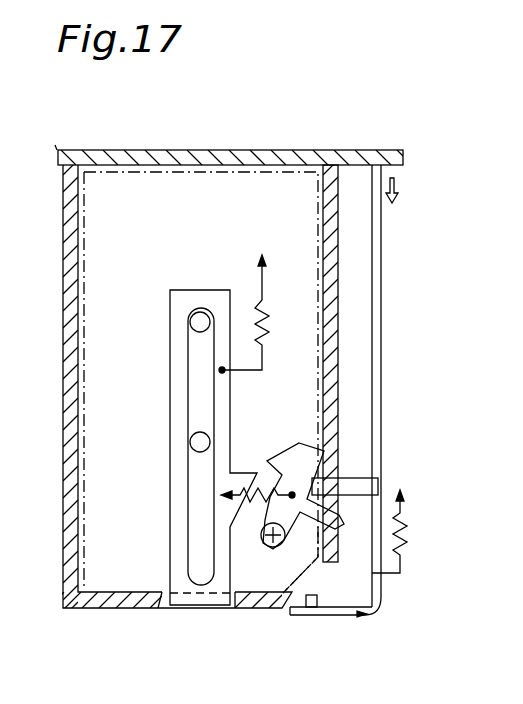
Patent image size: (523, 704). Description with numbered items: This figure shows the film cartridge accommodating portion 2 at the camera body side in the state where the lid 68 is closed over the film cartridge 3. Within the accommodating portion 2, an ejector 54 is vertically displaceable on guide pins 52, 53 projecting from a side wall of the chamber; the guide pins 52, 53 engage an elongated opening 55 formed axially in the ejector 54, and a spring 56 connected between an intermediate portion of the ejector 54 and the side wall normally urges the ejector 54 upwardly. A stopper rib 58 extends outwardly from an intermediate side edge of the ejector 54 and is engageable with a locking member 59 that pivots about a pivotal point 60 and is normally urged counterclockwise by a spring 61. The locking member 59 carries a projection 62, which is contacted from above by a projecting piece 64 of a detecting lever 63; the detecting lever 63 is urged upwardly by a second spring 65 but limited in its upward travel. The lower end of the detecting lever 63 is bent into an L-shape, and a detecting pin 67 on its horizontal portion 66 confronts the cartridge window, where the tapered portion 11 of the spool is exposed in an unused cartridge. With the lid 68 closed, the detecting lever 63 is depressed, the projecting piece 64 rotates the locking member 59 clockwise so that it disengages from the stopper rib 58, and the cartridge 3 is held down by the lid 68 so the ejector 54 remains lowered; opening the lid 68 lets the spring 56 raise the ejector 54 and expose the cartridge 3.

The film cartridge accommodating portion 2 is at (72, 230).
The film cartridge 3 is at (163, 168).
The tapered portion 11 is at (323, 583).
The guide pin 52 is at (198, 322).
The guide pin 53 is at (197, 442).
The ejector 54 is at (185, 297).
The elongated opening 55 is at (197, 383).
The spring 56 is at (272, 297).
The stopper rib 58 is at (240, 485).
The locking member 59 is at (302, 442).
The pivotal point 60 is at (267, 548).
The spring 61 is at (230, 526).
The projection 62 is at (335, 512).
The detecting lever 63 is at (382, 330).
The projecting piece 64 is at (374, 478).
The second spring 65 is at (405, 530).
The horizontal portion 66 is at (373, 620).
The detecting pin 67 is at (311, 618).
The lid 68 is at (254, 170).